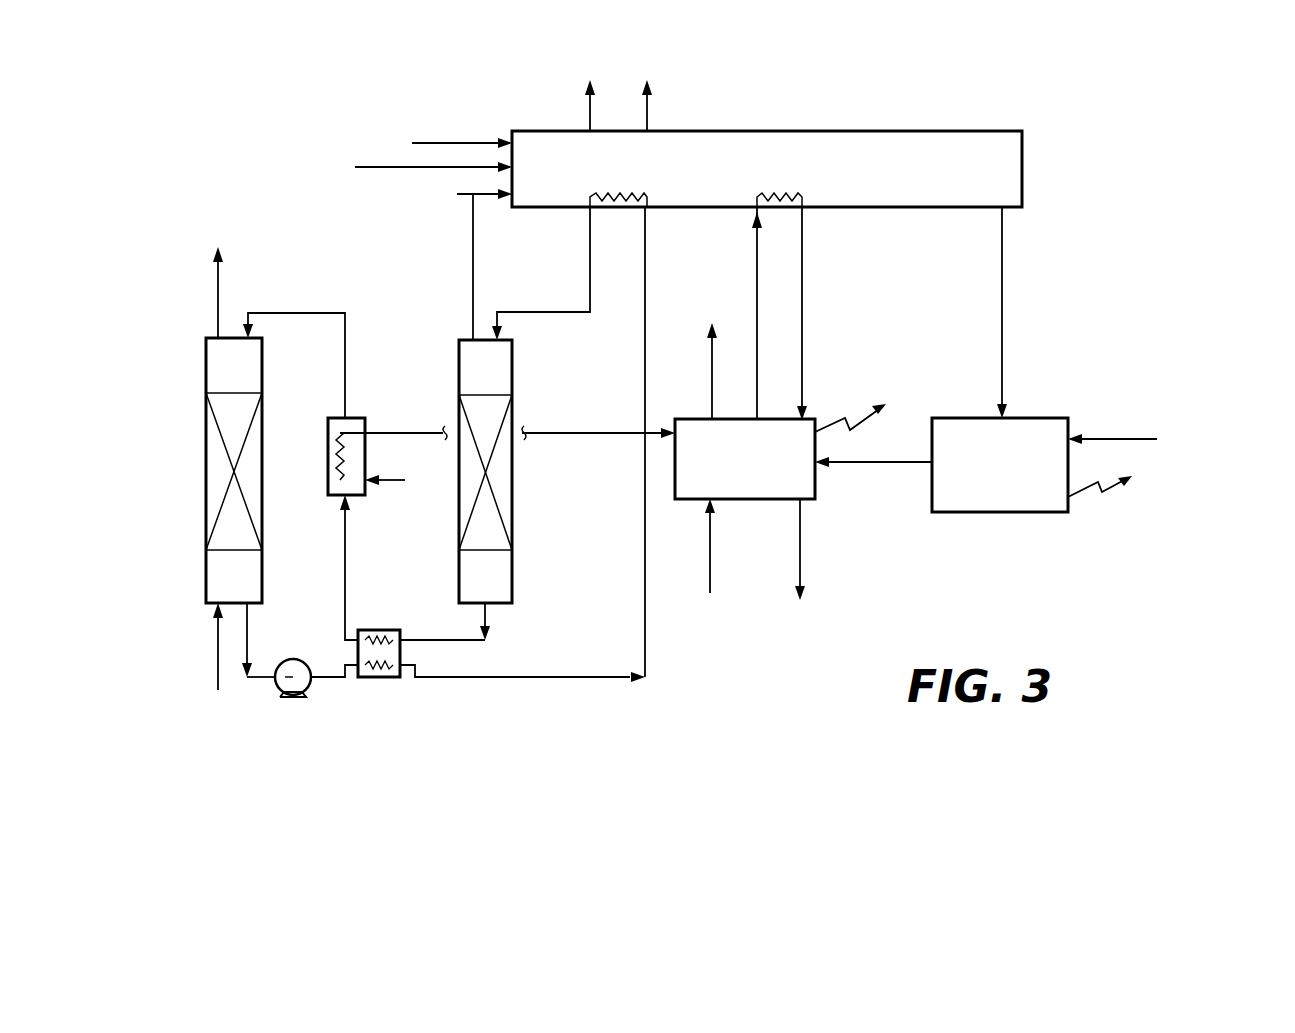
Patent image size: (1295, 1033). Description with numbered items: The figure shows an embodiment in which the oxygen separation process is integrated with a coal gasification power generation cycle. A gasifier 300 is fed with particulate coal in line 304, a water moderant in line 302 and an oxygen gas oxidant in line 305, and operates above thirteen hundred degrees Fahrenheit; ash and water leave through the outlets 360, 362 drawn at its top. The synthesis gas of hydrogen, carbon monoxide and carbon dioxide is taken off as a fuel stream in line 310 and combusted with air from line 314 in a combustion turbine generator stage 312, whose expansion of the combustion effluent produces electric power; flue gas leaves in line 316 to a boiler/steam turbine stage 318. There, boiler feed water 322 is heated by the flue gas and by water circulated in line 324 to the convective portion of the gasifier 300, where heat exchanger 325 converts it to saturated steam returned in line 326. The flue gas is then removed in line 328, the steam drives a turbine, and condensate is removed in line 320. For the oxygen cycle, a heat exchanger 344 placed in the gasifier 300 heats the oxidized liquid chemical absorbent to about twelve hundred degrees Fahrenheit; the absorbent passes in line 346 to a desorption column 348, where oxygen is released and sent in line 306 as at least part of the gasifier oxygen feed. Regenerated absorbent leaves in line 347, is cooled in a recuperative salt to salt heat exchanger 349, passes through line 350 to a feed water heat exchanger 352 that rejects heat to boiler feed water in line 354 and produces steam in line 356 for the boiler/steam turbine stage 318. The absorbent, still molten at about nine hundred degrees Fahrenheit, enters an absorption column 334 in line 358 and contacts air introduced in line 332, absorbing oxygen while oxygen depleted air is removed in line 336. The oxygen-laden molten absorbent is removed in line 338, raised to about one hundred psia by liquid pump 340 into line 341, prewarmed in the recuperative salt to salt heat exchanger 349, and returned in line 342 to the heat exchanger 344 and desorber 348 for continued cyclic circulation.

The gasifier 300 is at (956, 186).
The water moderant line 302 is at (462, 142).
The coal line 304 is at (445, 172).
The oxygen oxidant line 305 is at (457, 196).
The oxygen gas line 306 is at (473, 315).
The fuel stream line 310 is at (1005, 308).
The combustion turbine generator stage 312 is at (1008, 513).
The air line 314 is at (1098, 438).
The flue gas line 316 is at (872, 472).
The boiler/steam turbine stage 318 is at (748, 502).
The steam condensate line 320 is at (803, 538).
The boiler feed water line 322 is at (708, 580).
The water circulation line 324 is at (757, 282).
The heat exchanger 325 is at (795, 196).
The steam return line 326 is at (807, 290).
The flue gas removal line 328 is at (708, 386).
The air inlet line 332 is at (215, 652).
The absorption column 334 is at (205, 445).
The oxygen depleted air line 336 is at (215, 300).
The absorbent removal line 338 is at (247, 662).
The liquid pump 340 is at (310, 694).
The pump discharge line 341 is at (331, 672).
The absorbent return line 342 is at (606, 682).
The heat exchanger 344 is at (640, 196).
The heated absorbent line 346 is at (590, 305).
The regenerated absorbent line 347 is at (488, 617).
The desorption column 348 is at (458, 520).
The recuperative salt to salt heat exchanger 349 is at (391, 630).
The absorbent transfer line 350 is at (347, 573).
The feed water heat exchanger 352 is at (327, 442).
The boiler feed water line 354 is at (405, 480).
The steam line 356 is at (555, 432).
The absorbent feed line 358 is at (345, 370).
The ash outlet 360 is at (589, 114).
The water outlet 362 is at (648, 113).